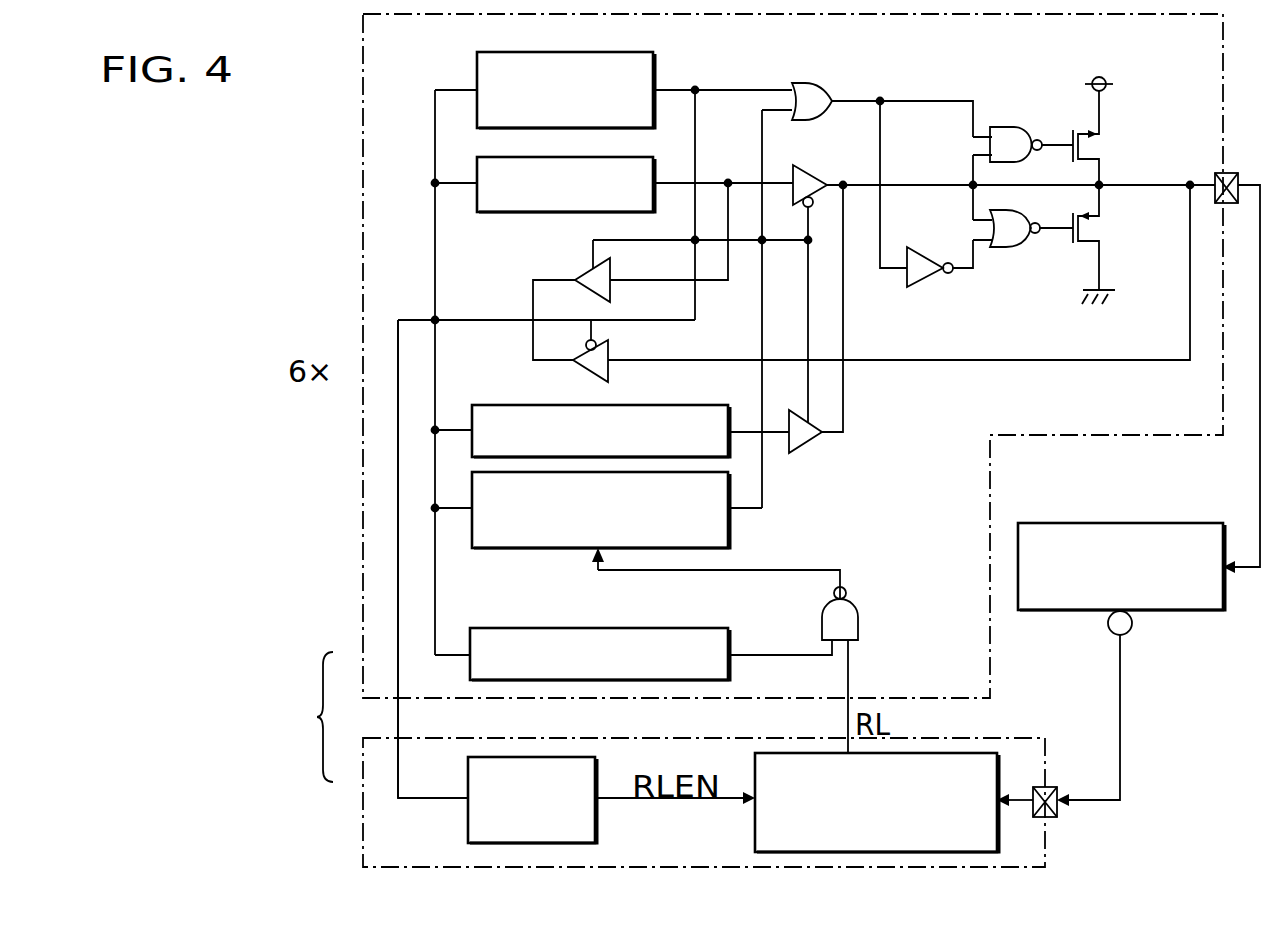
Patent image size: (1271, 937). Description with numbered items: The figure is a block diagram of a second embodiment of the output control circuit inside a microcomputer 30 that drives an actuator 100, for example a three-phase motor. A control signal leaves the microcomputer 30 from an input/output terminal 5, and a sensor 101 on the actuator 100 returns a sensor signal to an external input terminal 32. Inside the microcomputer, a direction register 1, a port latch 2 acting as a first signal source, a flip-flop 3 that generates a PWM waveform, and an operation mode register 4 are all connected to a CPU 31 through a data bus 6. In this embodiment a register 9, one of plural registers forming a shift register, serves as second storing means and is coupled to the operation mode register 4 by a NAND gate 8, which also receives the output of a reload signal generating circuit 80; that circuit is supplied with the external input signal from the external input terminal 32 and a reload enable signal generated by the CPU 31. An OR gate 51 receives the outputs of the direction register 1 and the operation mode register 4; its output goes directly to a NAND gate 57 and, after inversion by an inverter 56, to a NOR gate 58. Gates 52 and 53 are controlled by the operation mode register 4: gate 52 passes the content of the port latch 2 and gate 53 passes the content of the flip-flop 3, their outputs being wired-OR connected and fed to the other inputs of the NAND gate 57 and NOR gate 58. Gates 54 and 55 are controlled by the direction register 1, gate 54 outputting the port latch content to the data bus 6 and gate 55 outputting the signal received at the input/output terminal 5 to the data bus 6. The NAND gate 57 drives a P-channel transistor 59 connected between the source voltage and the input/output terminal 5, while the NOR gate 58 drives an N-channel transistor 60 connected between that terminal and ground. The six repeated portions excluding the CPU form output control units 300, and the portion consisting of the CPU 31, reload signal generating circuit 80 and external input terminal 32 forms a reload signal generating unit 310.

The direction register 1 is at (655, 73).
The port latch 2 is at (497, 212).
The flip-flop 3 is at (505, 405).
The operation mode register 4 is at (505, 548).
The input/output terminal 5 is at (1240, 173).
The data bus 6 is at (412, 318).
The NAND gate 8 is at (858, 624).
The register 9 is at (710, 630).
The microcomputer 30 is at (300, 717).
The CPU 31 is at (468, 828).
The external input terminal 32 is at (1057, 815).
The OR gate 51 is at (830, 85).
The gate 52 is at (815, 172).
The gate 53 is at (800, 446).
The gate 54 is at (582, 272).
The gate 55 is at (612, 372).
The inverter 56 is at (924, 285).
The NAND gate 57 is at (1018, 127).
The NOR gate 58 is at (1005, 249).
The P-channel transistor 59 is at (1105, 145).
The N-channel transistor 60 is at (1103, 228).
The reload signal generating circuit 80 is at (755, 828).
The actuator 100 is at (1180, 523).
The sensor 101 is at (1110, 630).
The output control unit 300 is at (350, 131).
The reload signal generating unit 310 is at (363, 832).